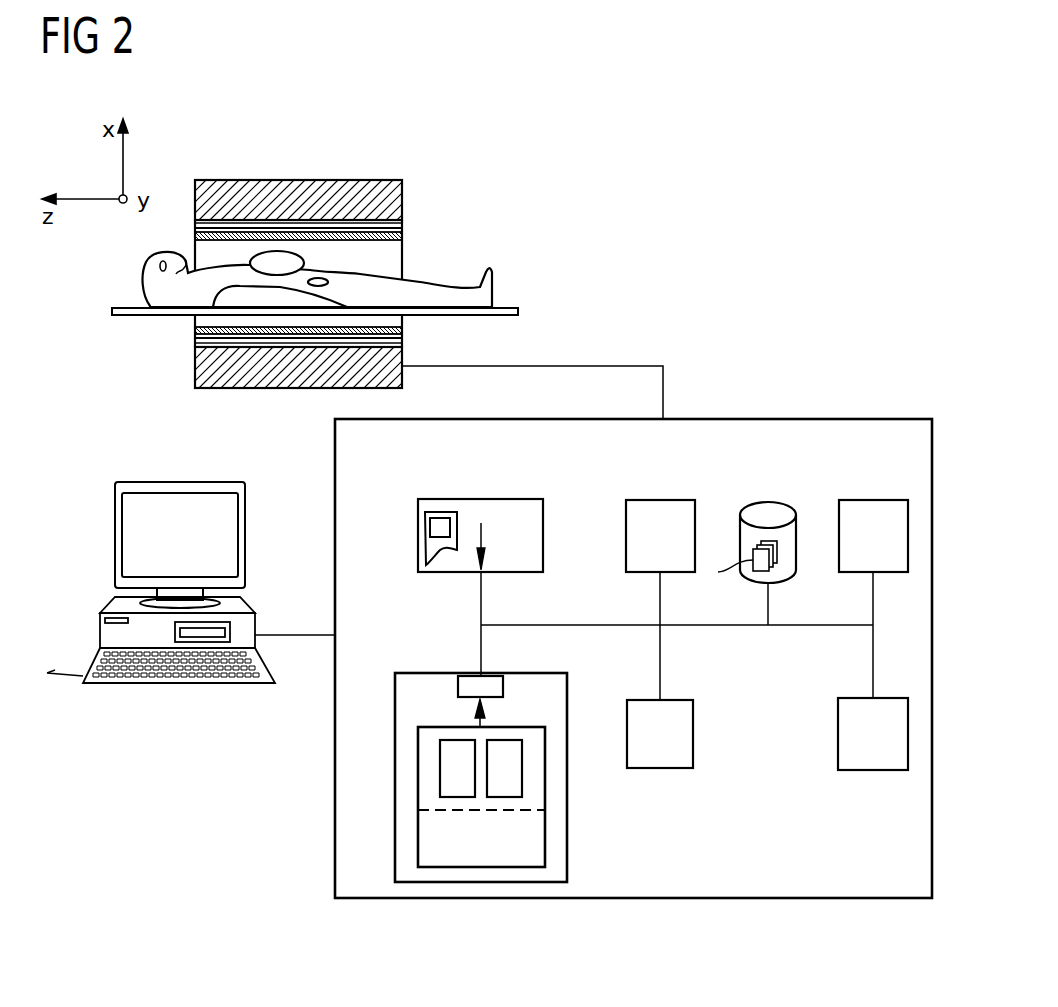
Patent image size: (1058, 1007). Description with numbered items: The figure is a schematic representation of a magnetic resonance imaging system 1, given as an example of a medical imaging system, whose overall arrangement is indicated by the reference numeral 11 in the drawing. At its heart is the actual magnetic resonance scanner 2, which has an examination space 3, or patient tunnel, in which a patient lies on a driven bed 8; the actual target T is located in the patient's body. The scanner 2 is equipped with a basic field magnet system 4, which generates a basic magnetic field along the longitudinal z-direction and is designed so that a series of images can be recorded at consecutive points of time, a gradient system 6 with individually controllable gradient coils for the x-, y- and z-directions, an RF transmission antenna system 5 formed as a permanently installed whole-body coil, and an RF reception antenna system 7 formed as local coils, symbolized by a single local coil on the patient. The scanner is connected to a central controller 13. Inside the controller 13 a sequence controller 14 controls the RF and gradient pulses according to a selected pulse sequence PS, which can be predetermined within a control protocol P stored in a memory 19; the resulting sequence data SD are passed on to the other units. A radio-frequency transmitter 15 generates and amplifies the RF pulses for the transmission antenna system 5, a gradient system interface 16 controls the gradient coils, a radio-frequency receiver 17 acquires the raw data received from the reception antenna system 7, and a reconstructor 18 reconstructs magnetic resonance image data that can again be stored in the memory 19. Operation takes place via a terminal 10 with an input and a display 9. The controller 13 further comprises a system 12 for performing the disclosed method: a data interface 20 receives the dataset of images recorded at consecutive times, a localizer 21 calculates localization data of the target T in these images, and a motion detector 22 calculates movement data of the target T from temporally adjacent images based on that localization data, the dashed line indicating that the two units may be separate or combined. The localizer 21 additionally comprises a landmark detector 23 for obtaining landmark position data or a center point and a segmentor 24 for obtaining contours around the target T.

The magnetic resonance imaging system 1 is at (820, 132).
The magnetic resonance scanner 2 is at (352, 150).
The examination space 3 is at (390, 256).
The basic field magnet system 4 is at (402, 195).
The RF transmission antenna system 5 is at (197, 230).
The gradient system 6 is at (402, 227).
The RF reception antenna system 7 is at (277, 262).
The driven bed 8 is at (512, 311).
The display 9 is at (180, 482).
The terminal 10 is at (120, 685).
The computer terminal 11 is at (85, 522).
The system 12 is at (567, 790).
The central controller 13 is at (835, 419).
The sequence controller 14 is at (487, 528).
The radio-frequency transmitter 15 is at (660, 500).
The gradient system interface 16 is at (685, 700).
The radio-frequency receiver 17 is at (873, 500).
The reconstructor 18 is at (838, 735).
The memory 19 is at (768, 500).
The data interface 20 is at (503, 685).
The localizer 21 is at (423, 770).
The motion detector 22 is at (533, 833).
The landmark detector 23 is at (458, 797).
The segmentor 24 is at (502, 797).
The target T is at (318, 278).
The pulse sequence PS is at (440, 517).
The control protocol P is at (442, 557).
The sequence data SD is at (482, 533).